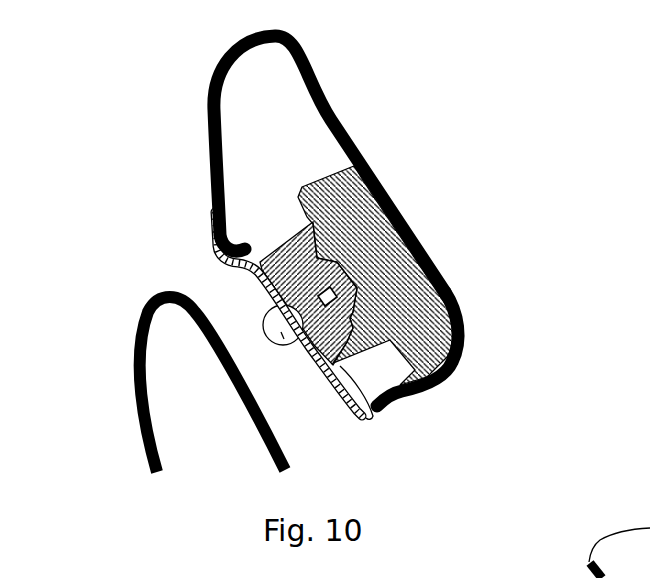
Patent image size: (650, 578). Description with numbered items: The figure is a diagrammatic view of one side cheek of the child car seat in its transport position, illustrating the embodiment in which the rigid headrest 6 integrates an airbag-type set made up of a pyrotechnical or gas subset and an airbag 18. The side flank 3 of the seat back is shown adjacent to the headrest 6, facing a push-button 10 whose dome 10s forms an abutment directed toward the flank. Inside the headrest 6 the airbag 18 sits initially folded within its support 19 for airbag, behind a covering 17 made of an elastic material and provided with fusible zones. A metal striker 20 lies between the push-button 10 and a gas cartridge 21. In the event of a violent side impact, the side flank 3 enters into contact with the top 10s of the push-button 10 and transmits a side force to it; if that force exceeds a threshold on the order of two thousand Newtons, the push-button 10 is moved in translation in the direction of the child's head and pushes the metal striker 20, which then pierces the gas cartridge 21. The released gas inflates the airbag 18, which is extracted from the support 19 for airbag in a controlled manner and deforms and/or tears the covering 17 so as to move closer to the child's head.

The side flank 3 is at (180, 405).
The headrest 6 is at (338, 77).
The push-button 10 is at (285, 346).
The dome 10s is at (265, 316).
The covering 17 is at (458, 302).
The airbag 18 is at (390, 190).
The support for airbag 19 is at (292, 268).
The metal striker 20 is at (318, 298).
The gas cartridge 21 is at (376, 420).